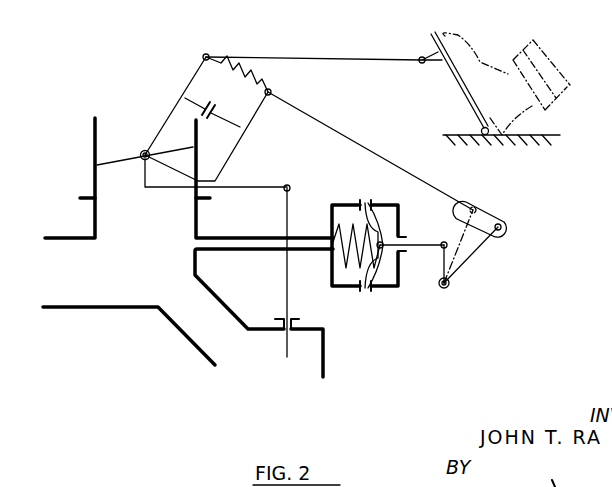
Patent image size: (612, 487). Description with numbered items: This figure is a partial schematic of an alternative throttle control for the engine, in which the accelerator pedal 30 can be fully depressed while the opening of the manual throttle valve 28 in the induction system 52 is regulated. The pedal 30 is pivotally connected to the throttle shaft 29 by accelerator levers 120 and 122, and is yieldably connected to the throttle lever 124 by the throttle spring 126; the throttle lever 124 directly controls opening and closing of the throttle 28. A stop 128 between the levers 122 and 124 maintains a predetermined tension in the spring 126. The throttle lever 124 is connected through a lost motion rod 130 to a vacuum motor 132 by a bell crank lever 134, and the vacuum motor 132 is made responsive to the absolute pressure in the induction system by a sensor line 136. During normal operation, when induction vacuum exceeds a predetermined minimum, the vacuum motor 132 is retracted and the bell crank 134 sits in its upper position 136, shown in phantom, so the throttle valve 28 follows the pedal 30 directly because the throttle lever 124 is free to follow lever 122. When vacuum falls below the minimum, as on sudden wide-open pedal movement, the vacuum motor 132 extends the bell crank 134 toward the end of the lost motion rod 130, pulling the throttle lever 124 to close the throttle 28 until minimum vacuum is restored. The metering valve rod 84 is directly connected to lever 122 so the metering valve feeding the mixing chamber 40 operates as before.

The manual throttle valve 28 is at (110, 160).
The throttle shaft 29 is at (142, 152).
The accelerator pedal 30 is at (463, 97).
The mixing chamber 40 is at (276, 393).
The induction system 52 is at (88, 284).
The metering valve rod 84 is at (288, 300).
The accelerator lever 120 is at (292, 57).
The accelerator lever 122 is at (191, 83).
The throttle lever 124 is at (236, 149).
The throttle spring 126 is at (252, 83).
The stop 128 is at (217, 100).
The lost motion rod 130 is at (450, 194).
The vacuum motor 132 is at (378, 198).
The bell crank lever 134 is at (451, 271).
The sensor line 136 is at (275, 238).